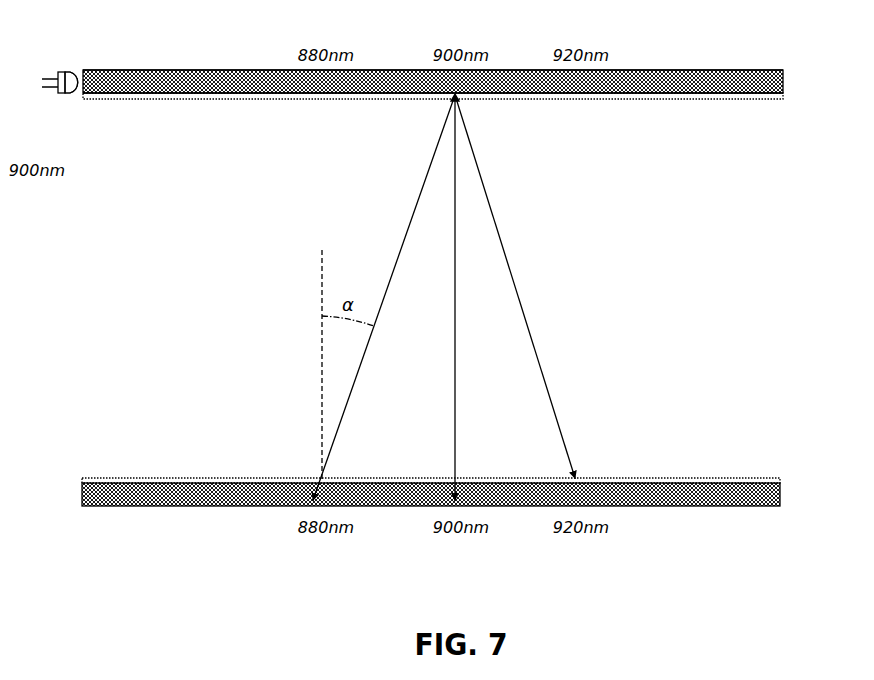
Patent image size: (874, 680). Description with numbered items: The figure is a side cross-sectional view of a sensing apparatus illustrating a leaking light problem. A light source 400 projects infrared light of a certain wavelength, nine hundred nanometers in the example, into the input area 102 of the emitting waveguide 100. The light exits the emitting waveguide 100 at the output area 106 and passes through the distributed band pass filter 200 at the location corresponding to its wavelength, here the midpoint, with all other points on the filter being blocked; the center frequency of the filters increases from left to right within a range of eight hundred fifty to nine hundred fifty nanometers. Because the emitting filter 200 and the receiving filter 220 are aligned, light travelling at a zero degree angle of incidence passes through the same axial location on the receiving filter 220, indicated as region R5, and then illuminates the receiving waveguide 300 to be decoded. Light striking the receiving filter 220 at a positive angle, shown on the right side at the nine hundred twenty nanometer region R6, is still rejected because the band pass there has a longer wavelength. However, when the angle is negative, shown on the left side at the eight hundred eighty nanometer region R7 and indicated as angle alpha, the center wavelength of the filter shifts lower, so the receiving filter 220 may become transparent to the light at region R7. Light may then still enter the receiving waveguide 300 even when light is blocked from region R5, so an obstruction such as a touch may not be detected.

The emitting waveguide 100 is at (784, 70).
The input area 102 is at (80, 72).
The output area 106 is at (702, 86).
The distributed band pass filter 200 is at (784, 98).
The receiving filter 220 is at (781, 479).
The receiving waveguide 300 is at (781, 506).
The light source 400 is at (72, 90).
The band pass region R5 is at (448, 474).
The band pass region R6 is at (582, 474).
The band pass region R7 is at (316, 474).